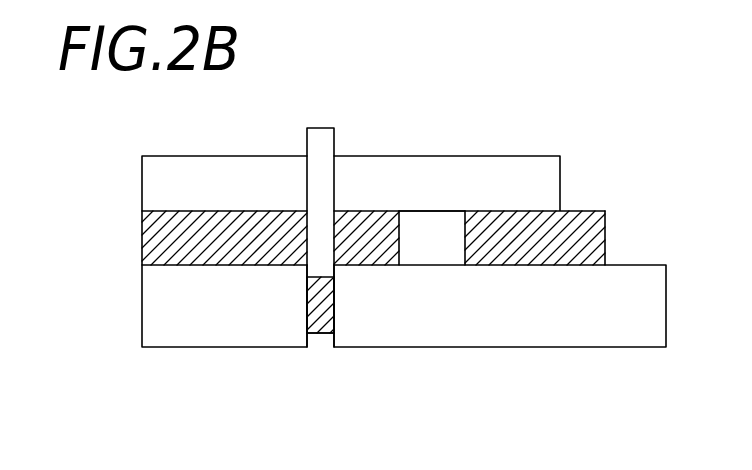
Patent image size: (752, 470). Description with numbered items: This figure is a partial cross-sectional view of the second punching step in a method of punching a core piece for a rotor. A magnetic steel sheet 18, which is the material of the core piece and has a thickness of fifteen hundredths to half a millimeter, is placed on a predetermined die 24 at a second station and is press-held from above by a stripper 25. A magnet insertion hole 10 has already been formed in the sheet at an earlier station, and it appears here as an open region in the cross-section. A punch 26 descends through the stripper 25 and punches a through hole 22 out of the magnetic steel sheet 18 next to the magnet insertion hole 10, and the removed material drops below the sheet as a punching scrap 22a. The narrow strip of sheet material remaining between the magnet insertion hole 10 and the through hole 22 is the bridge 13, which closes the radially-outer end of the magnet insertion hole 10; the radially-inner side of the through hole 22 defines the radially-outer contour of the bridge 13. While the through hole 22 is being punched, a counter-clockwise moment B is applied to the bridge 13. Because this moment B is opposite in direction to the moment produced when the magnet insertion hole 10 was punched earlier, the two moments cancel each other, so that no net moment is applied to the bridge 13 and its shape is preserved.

The magnet insertion hole 10 is at (435, 252).
The bridge 13 is at (377, 252).
The magnetic steel sheet 18 is at (150, 243).
The through hole 22 is at (323, 240).
The punching scrap 22a is at (320, 327).
The die 24 is at (180, 335).
The stripper 25 is at (442, 170).
The punch 26 is at (320, 138).
The counter-clockwise moment B is at (321, 221).